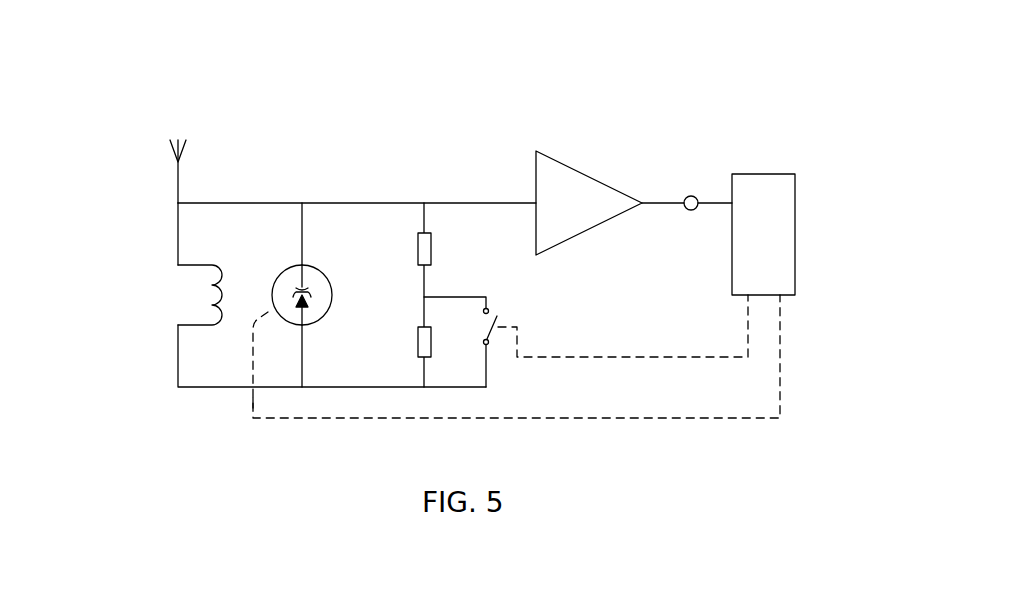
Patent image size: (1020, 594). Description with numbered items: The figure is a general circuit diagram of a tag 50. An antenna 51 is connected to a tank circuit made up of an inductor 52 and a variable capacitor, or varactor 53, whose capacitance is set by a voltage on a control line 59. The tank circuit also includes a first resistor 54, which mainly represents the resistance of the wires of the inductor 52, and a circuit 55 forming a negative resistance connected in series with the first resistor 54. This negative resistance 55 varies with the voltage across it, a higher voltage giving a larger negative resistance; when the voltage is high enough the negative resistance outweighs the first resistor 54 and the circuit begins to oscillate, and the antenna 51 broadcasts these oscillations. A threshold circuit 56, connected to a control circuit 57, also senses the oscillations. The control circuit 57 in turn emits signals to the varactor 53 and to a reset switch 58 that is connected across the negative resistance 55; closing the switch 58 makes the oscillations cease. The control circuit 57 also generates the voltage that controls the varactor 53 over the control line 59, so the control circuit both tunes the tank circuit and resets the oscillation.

The tag 50 is at (447, 102).
The antenna 51 is at (176, 165).
The inductor 52 is at (205, 292).
The varactor 53 is at (278, 277).
The first resistor 54 is at (417, 250).
The negative resistance circuit 55 is at (417, 344).
The threshold circuit 56 is at (592, 176).
The control circuit 57 is at (778, 174).
The reset switch 58 is at (498, 317).
The control line 59 is at (253, 403).